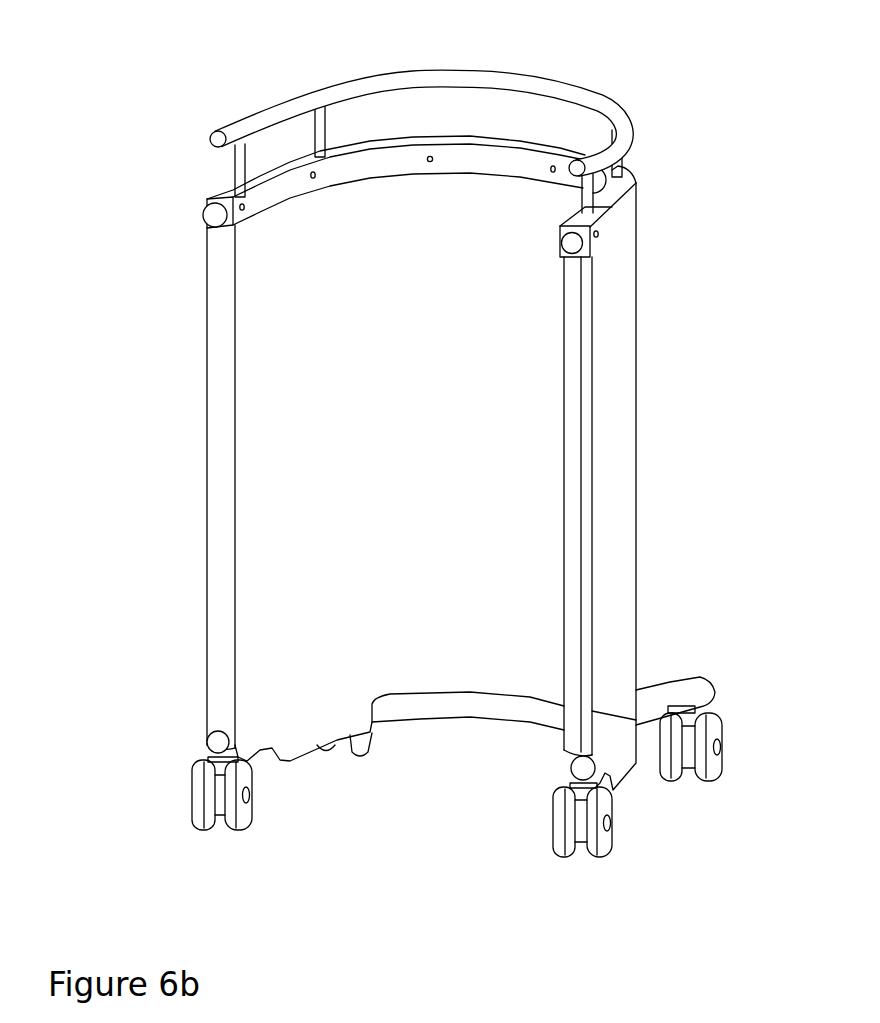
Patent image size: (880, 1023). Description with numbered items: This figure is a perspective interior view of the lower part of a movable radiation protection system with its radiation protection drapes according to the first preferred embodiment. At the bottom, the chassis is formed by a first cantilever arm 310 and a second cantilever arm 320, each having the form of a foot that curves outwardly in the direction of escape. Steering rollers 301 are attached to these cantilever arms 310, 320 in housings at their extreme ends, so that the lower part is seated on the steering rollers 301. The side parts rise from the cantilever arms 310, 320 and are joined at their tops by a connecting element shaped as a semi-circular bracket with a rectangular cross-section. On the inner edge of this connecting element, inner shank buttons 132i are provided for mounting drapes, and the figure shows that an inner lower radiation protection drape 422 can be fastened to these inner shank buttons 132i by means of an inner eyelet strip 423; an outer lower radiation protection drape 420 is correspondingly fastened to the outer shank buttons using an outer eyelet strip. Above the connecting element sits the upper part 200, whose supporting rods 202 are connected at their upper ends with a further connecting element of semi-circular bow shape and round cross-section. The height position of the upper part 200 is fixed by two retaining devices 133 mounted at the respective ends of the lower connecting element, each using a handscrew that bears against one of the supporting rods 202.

The upper part 200 is at (403, 85).
The supporting rods 202 is at (237, 163).
The inner eyelet strip 423 is at (385, 162).
The inner shank buttons 132i is at (433, 157).
The retaining devices 133 is at (211, 216).
The outer lower radiation protection drape 420 is at (615, 357).
The inner lower radiation protection drape 422 is at (253, 433).
The first cantilever arm 310 is at (670, 693).
The second cantilever arm 320 is at (208, 743).
The steering rollers 301 is at (360, 762).